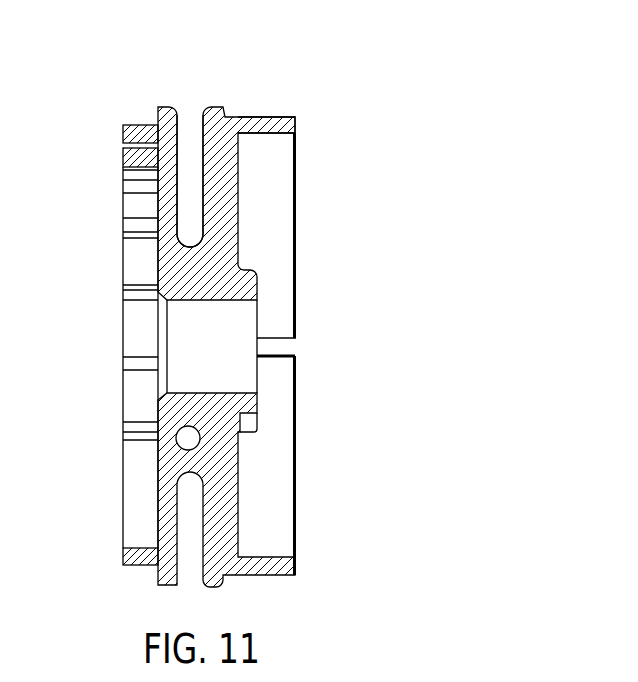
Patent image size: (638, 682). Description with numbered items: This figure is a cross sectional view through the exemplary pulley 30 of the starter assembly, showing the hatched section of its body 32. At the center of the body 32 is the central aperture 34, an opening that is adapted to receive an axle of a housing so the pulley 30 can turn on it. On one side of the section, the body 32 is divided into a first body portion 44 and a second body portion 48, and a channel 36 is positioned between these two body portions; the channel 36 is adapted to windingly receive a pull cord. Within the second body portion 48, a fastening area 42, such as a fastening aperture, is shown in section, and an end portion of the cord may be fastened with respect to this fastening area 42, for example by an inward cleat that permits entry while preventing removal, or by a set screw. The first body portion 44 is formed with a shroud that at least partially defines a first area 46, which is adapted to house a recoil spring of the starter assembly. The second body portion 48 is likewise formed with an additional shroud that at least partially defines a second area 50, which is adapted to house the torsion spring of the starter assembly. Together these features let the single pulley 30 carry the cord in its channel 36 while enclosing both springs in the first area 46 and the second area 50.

The pulley 30 is at (280, 301).
The body 32 is at (317, 297).
The central aperture 34 is at (207, 392).
The channel 36 is at (190, 116).
The fastening area 42 is at (188, 438).
The first body portion 44 is at (128, 110).
The first area 46 is at (143, 267).
The second body portion 48 is at (293, 112).
The second area 50 is at (268, 197).